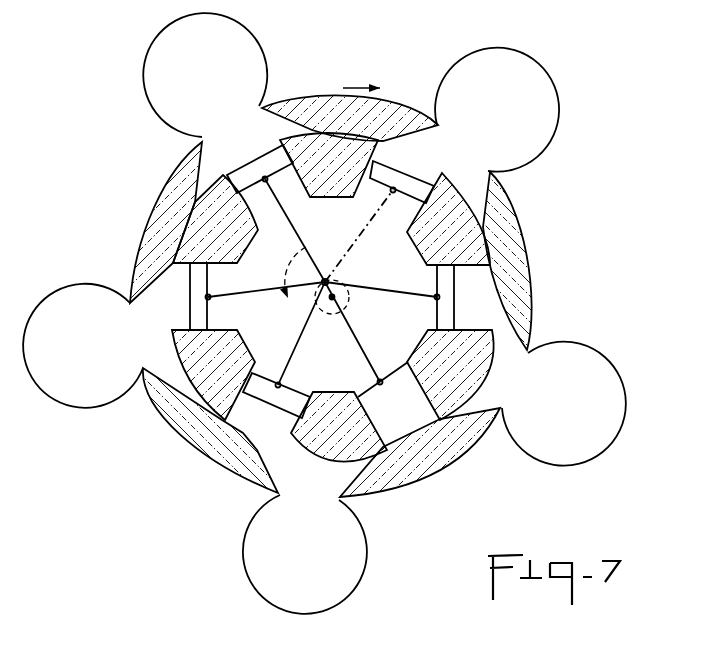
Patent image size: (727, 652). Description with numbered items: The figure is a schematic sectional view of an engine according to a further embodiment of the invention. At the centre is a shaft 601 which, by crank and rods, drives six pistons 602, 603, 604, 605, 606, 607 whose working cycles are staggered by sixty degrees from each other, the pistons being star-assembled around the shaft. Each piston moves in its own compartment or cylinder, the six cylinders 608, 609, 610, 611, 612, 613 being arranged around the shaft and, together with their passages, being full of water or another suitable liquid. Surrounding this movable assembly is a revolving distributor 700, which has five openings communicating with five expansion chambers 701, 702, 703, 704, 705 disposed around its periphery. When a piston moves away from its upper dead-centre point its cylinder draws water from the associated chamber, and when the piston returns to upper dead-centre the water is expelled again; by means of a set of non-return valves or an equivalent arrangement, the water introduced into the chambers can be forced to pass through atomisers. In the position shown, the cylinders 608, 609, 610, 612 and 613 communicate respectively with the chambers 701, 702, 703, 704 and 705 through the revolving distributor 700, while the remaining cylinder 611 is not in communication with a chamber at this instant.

The shaft 601 is at (331, 285).
The piston 602 is at (290, 186).
The piston 603 is at (210, 283).
The piston 604 is at (282, 358).
The piston 605 is at (367, 392).
The piston 606 is at (437, 312).
The piston 607 is at (407, 233).
The cylinder 608 is at (266, 162).
The cylinder 609 is at (182, 302).
The cylinder 610 is at (272, 433).
The cylinder 611 is at (418, 410).
The cylinder 612 is at (477, 287).
The cylinder 613 is at (413, 172).
The revolving distributor 700 is at (325, 97).
The expansion chamber 701 is at (160, 66).
The expansion chamber 702 is at (92, 285).
The expansion chamber 703 is at (260, 550).
The expansion chamber 704 is at (550, 458).
The expansion chamber 705 is at (538, 68).